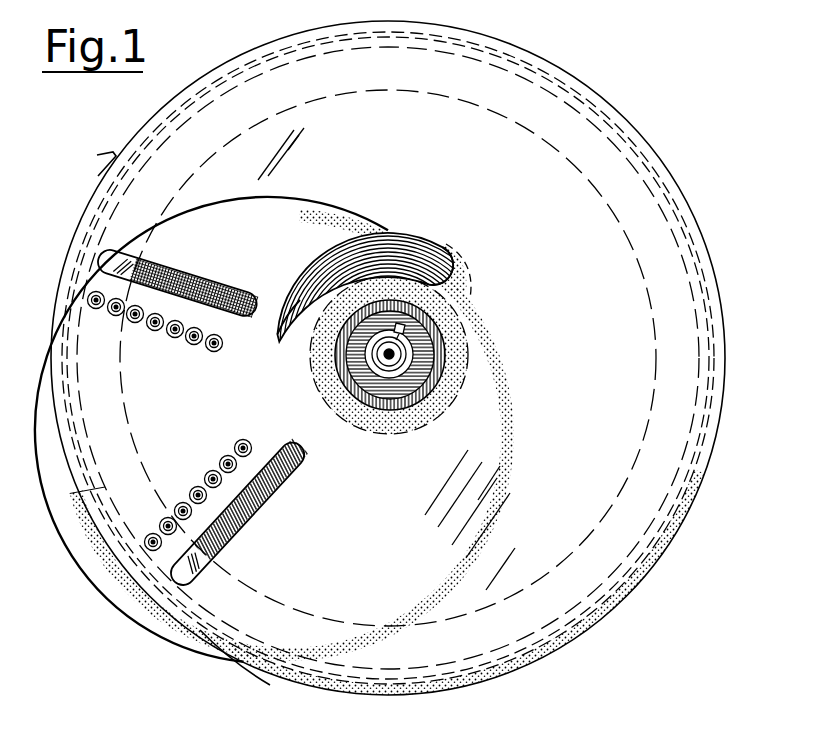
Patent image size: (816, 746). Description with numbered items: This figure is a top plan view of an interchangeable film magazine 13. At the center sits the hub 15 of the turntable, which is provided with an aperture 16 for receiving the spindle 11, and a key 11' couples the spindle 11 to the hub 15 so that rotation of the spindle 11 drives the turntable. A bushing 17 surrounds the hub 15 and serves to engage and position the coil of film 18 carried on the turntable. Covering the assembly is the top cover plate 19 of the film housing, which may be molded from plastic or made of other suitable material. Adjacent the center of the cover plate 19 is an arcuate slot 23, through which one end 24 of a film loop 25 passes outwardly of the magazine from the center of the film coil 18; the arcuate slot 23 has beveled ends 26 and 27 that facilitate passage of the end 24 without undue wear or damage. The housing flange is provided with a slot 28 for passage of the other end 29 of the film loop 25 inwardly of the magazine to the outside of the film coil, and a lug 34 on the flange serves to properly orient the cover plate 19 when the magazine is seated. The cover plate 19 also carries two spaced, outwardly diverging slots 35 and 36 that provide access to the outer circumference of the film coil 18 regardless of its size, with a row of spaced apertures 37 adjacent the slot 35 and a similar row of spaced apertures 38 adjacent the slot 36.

The spindle 11 is at (427, 355).
The key 11' is at (422, 349).
The film magazine 13 is at (697, 505).
The hub 15 is at (399, 414).
The aperture 16 is at (408, 331).
The bushing 17 is at (444, 411).
The coil of film 18 is at (433, 251).
The top cover plate 19 is at (605, 448).
The arcuate slot 23 is at (320, 265).
The end of film loop 24 is at (370, 320).
The film loop 25 is at (88, 578).
The beveled end 26 is at (463, 284).
The beveled end 27 is at (272, 346).
The slot 28 is at (105, 487).
The other end of film loop 29 is at (233, 665).
The lug 34 is at (378, 358).
The slot 35 is at (226, 297).
The slot 36 is at (275, 490).
The row of spaced apertures 37 is at (160, 343).
The row of spaced apertures 38 is at (198, 493).